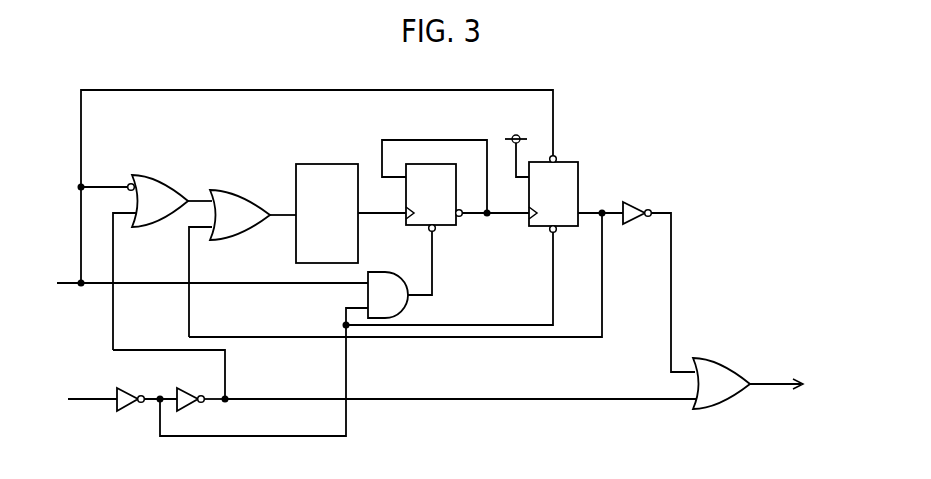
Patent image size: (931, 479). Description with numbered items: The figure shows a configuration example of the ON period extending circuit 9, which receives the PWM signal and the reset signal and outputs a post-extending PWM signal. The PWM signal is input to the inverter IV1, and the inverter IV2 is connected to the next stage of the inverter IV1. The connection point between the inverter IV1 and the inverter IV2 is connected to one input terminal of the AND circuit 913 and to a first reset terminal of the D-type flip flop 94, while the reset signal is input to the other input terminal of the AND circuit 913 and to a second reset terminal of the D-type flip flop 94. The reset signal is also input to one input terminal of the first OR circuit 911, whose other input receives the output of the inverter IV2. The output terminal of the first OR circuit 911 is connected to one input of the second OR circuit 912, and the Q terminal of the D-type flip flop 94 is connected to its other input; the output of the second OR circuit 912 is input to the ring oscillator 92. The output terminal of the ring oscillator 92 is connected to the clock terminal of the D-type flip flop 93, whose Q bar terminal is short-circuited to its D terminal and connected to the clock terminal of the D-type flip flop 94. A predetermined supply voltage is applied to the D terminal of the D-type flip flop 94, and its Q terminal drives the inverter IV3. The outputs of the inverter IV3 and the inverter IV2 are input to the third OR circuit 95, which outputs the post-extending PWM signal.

The ON period extending circuit 9 is at (627, 125).
The first OR circuit 911 is at (168, 175).
The second OR circuit 912 is at (247, 190).
The AND circuit 913 is at (394, 273).
The ring oscillator 92 is at (306, 164).
The D-type flip flop 93 is at (447, 232).
The D-type flip flop 94 is at (572, 161).
The third OR circuit 95 is at (718, 358).
The inverter IV1 is at (127, 412).
The inverter IV2 is at (188, 390).
The inverter IV3 is at (634, 203).